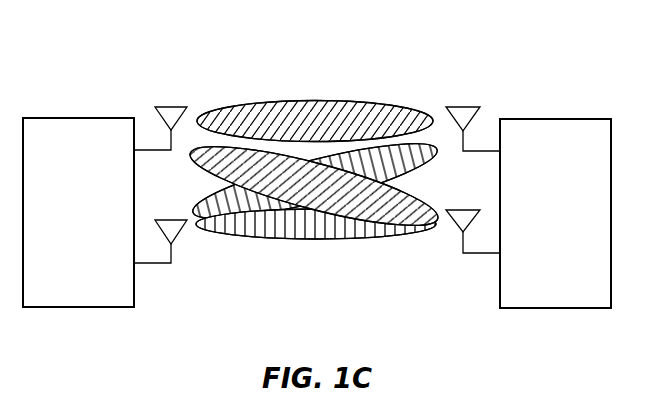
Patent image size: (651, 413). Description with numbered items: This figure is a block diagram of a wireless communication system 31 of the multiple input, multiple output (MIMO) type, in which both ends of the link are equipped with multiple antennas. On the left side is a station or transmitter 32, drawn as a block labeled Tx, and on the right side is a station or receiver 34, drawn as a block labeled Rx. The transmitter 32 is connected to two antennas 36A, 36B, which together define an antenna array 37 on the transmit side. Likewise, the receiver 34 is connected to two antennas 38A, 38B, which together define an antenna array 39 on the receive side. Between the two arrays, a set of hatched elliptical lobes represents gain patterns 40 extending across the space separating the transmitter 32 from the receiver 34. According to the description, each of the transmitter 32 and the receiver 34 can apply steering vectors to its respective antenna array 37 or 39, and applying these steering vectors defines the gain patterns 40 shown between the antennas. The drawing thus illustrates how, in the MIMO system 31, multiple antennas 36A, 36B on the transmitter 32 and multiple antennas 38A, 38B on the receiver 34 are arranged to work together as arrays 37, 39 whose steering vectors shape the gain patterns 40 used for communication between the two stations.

The wireless communication system 31 is at (78, 42).
The transmitter 32 is at (80, 308).
The receiver 34 is at (557, 309).
The antenna 36A is at (172, 106).
The antenna 36B is at (172, 219).
The antenna 38A is at (469, 106).
The antenna 38B is at (469, 209).
The antenna array 37 is at (172, 316).
The antenna array 39 is at (477, 341).
The gain patterns 40 is at (344, 87).